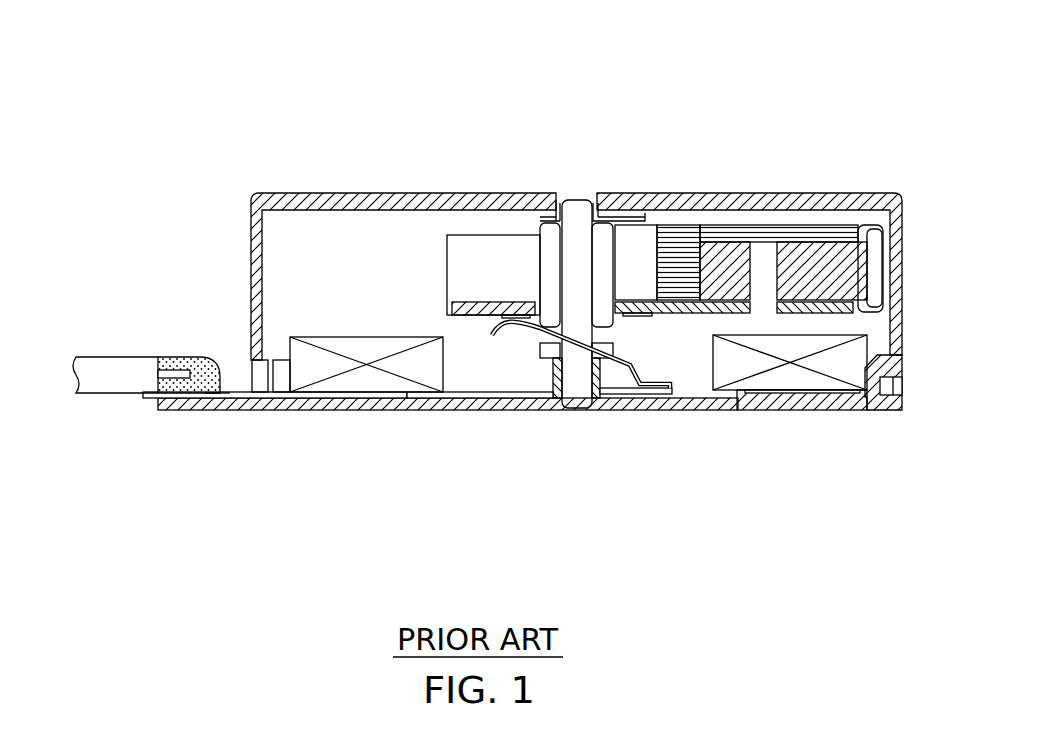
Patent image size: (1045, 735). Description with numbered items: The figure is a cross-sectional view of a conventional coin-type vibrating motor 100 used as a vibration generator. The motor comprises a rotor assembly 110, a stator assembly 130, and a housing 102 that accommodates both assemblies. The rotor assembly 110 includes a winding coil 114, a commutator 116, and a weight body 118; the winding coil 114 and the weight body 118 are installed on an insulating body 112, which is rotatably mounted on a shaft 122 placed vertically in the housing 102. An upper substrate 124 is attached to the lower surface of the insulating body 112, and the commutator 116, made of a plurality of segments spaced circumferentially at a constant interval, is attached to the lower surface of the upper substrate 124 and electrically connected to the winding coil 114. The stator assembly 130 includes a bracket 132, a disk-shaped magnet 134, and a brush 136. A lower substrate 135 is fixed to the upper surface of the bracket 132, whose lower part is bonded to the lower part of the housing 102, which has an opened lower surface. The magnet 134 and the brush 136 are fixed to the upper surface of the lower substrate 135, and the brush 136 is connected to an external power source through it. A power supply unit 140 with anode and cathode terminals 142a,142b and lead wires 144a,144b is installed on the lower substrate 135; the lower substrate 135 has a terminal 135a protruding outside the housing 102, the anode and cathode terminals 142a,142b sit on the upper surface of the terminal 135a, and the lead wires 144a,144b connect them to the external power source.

The coin-type vibrating motor 100 is at (467, 291).
The housing 102 is at (250, 197).
The rotor assembly 110 is at (554, 246).
The insulating body 112 is at (483, 250).
The winding coil 114 is at (682, 245).
The commutator 116 is at (653, 315).
The weight body 118 is at (812, 255).
The shaft 122 is at (580, 208).
The upper substrate 124 is at (473, 303).
The stator assembly 130 is at (441, 378).
The bracket 132 is at (508, 410).
The magnet 134 is at (352, 383).
The lower substrate 135 is at (478, 380).
The terminal 135a is at (217, 393).
The brush 136 is at (628, 365).
The power supply unit 140 is at (177, 358).
The anode and cathode terminals 142a,142b is at (177, 373).
The lead wires 144a,144b is at (98, 368).